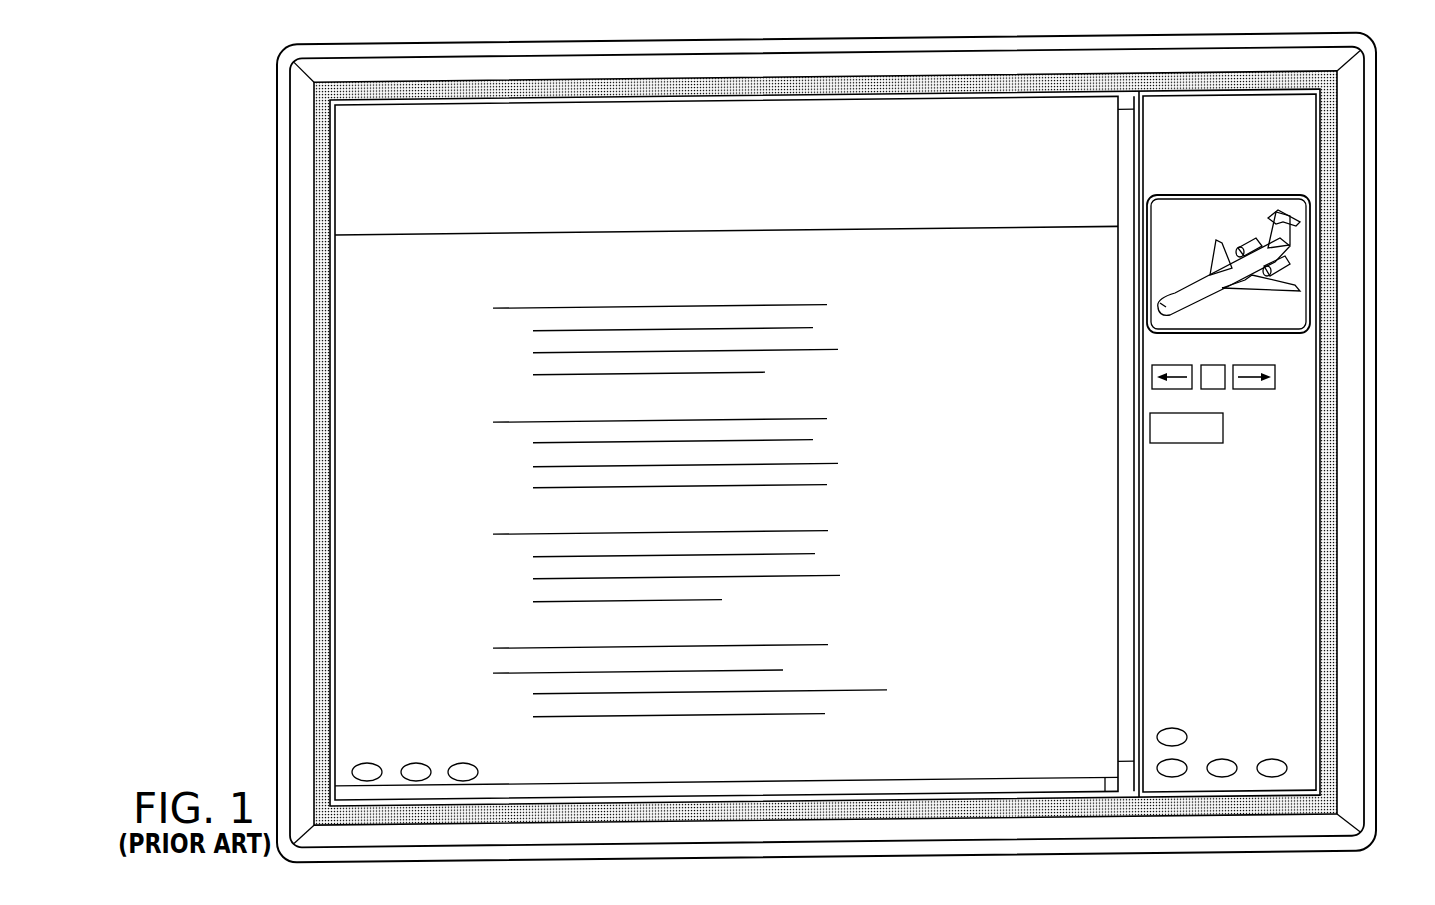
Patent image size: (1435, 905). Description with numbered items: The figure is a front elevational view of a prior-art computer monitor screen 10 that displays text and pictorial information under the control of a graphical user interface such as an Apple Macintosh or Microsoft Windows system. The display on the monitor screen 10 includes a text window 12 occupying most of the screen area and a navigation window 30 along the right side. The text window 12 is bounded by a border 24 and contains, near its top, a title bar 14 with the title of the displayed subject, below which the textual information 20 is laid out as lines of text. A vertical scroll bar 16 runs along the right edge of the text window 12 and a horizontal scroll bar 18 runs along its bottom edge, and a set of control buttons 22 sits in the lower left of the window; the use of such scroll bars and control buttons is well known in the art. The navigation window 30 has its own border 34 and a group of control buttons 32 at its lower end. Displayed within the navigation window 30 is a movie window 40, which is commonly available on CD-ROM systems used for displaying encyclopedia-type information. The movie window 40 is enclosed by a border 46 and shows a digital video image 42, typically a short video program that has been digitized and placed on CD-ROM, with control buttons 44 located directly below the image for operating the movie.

The monitor screen 10 is at (258, 621).
The text window 12 is at (382, 531).
The title bar 14 is at (758, 184).
The vertical scroll bar 16 is at (1125, 476).
The horizontal scroll bar 18 is at (932, 792).
The textual information 20 is at (513, 310).
The control buttons 22 is at (463, 763).
The border 24 is at (436, 105).
The navigation window 30 is at (1292, 535).
The control buttons 32 is at (1182, 761).
The border 34 is at (1320, 643).
The movie window 40 is at (1304, 316).
The digital video image 42 is at (1200, 293).
The control buttons 44 is at (1223, 425).
The border 46 is at (1218, 196).